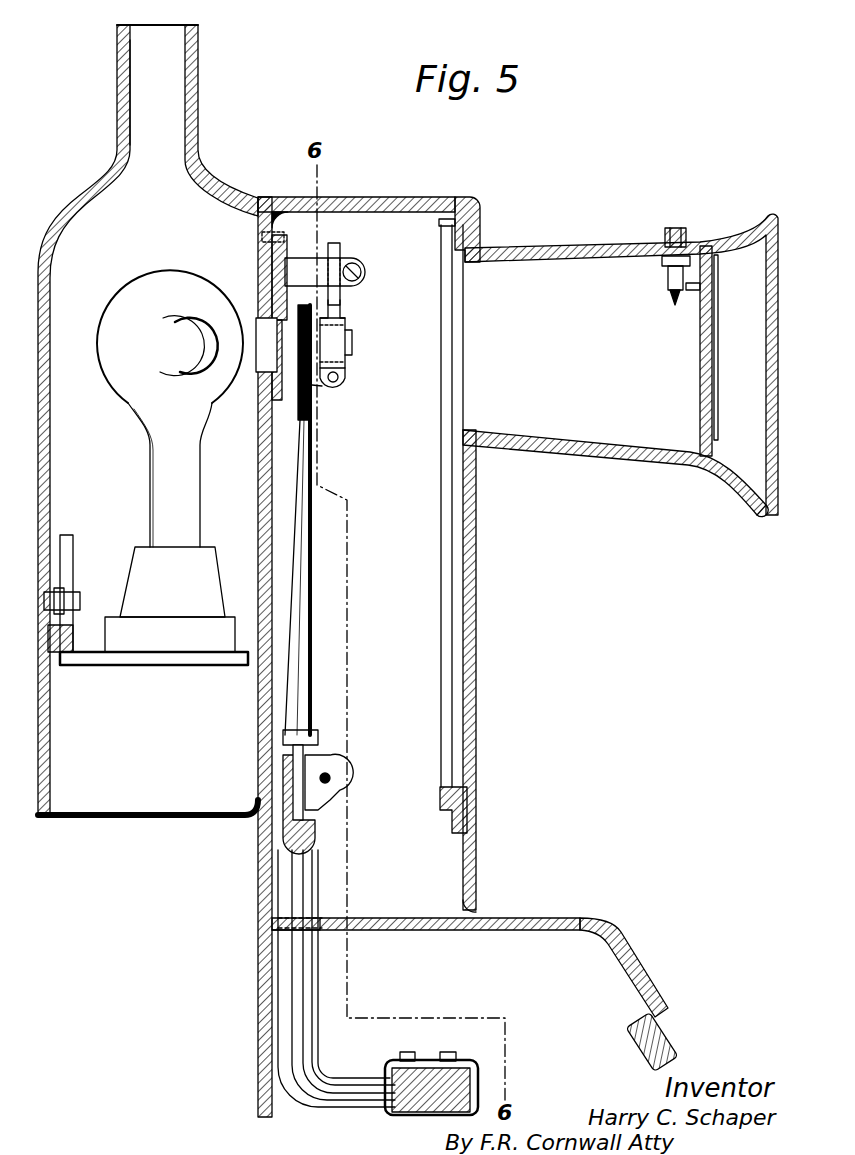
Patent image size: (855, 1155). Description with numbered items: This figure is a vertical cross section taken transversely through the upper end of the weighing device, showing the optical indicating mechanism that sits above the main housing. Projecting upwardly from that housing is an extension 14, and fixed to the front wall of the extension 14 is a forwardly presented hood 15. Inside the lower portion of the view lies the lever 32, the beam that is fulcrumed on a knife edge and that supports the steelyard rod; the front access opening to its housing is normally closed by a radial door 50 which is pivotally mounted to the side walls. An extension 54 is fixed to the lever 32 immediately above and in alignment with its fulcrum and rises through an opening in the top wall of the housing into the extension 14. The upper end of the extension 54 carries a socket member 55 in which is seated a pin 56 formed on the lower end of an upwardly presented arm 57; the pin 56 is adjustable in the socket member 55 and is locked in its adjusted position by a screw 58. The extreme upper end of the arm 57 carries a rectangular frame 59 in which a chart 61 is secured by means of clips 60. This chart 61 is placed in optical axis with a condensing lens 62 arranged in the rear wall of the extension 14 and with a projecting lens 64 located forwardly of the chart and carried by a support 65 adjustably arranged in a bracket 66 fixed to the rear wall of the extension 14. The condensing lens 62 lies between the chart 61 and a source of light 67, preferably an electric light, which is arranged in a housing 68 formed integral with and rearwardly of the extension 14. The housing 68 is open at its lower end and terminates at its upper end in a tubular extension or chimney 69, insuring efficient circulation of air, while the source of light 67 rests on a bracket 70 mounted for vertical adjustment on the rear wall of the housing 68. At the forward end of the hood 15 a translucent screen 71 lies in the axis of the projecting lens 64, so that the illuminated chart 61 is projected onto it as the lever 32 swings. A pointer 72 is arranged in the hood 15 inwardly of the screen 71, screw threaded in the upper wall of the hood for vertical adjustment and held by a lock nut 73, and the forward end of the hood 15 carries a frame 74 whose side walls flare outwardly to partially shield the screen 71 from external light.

The extension 14 is at (423, 655).
The hood 15 is at (522, 248).
The lever 32 is at (400, 1107).
The radial door 50 is at (670, 1055).
The extension 54 is at (285, 975).
The socket member 55 is at (260, 830).
The pin 56 is at (315, 752).
The arm 57 is at (310, 595).
The screw 58 is at (330, 780).
The rectangular frame 59 is at (305, 385).
The clips 60 is at (338, 315).
The chart 61 is at (338, 375).
The condensing lens 62 is at (258, 320).
The projecting lens 64 is at (345, 340).
The support 65 is at (340, 250).
The bracket 66 is at (362, 276).
The source of light 67 is at (158, 280).
The housing 68 is at (143, 807).
The tubular extension or chimney 69 is at (173, 78).
The bracket 70 is at (165, 665).
The translucent screen 71 is at (700, 400).
The pointer 72 is at (665, 280).
The lock nut 73 is at (672, 230).
The frame 74 is at (762, 490).